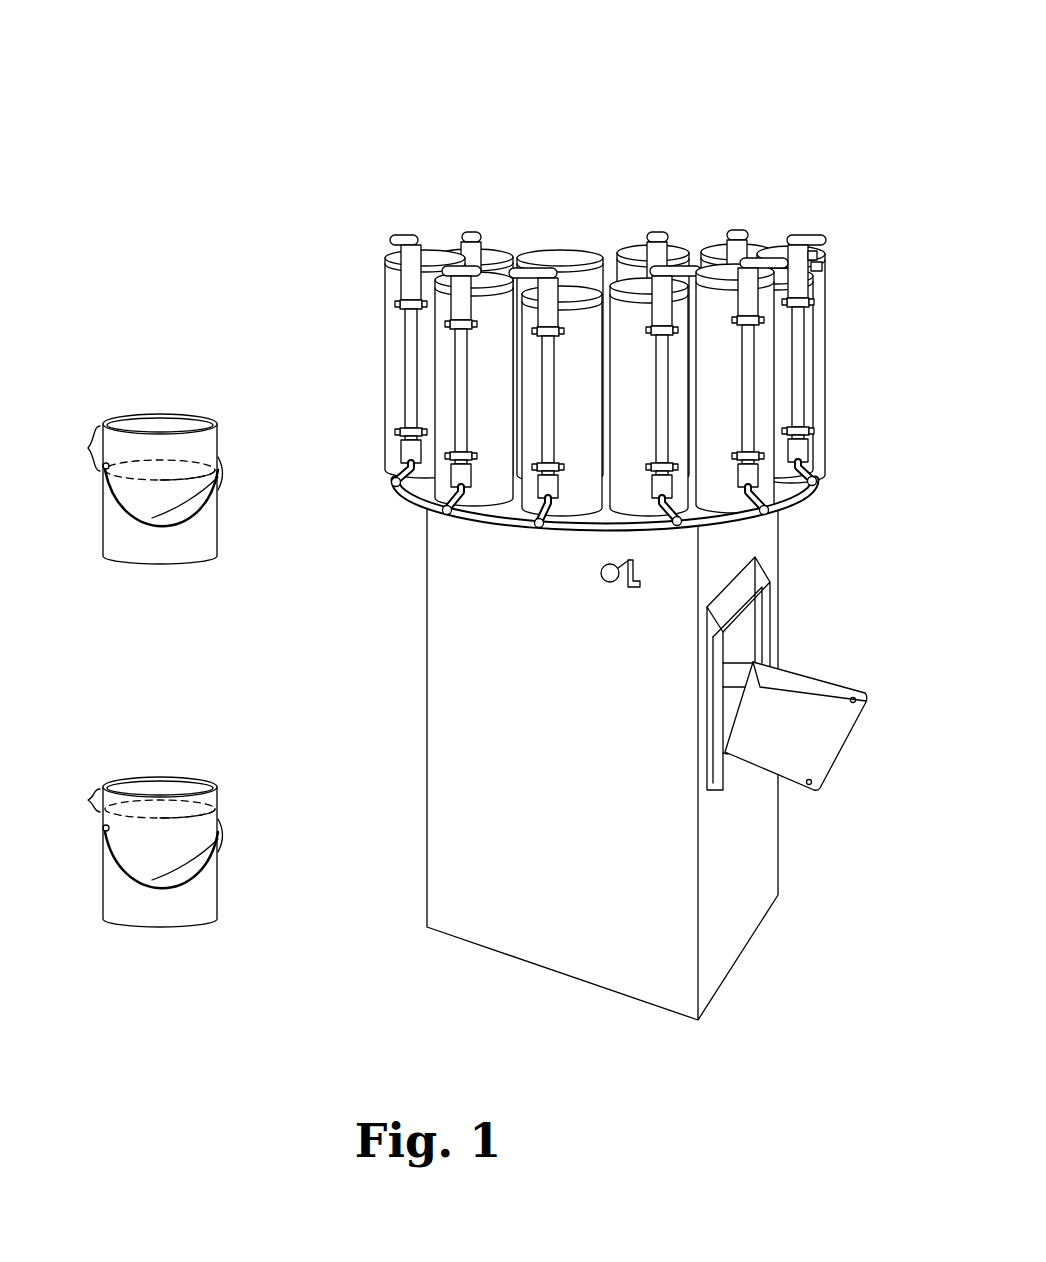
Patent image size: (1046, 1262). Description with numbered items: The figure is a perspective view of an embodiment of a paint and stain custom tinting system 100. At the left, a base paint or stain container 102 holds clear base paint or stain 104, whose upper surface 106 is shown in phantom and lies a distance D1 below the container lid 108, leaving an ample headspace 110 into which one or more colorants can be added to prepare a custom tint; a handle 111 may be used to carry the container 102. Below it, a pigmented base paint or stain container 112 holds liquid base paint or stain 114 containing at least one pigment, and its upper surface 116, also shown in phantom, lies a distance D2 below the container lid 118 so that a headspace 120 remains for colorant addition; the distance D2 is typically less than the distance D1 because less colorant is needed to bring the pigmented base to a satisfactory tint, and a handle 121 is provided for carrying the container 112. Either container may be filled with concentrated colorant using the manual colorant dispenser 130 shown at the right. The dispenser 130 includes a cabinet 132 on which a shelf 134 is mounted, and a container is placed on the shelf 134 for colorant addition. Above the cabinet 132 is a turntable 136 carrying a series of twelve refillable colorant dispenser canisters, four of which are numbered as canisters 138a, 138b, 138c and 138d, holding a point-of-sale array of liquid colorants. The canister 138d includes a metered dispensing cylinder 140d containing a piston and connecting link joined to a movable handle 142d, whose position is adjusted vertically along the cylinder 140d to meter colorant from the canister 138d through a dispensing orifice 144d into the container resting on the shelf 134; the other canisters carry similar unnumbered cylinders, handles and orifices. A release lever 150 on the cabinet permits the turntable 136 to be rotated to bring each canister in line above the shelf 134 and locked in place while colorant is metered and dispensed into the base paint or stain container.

The paint and stain custom tinting system 100 is at (464, 520).
The base paint or stain container 102 is at (157, 472).
The clear base paint or stain 104 is at (192, 506).
The upper surface 106 is at (200, 478).
The container lid 108 is at (170, 427).
The headspace 110 is at (200, 452).
The handle 111 is at (152, 518).
The pigmented base paint or stain container 112 is at (162, 836).
The liquid base paint or stain 114 is at (190, 867).
The upper surface 116 is at (198, 815).
The container lid 118 is at (168, 787).
The headspace 120 is at (213, 801).
The handle 121 is at (145, 880).
The manual colorant dispenser 130 is at (618, 580).
The cabinet 132 is at (447, 722).
The shelf 134 is at (820, 715).
The turntable 136 is at (405, 497).
The colorant dispenser canister 138a is at (613, 248).
The colorant dispenser canister 138b is at (695, 250).
The colorant dispenser canister 138c is at (827, 262).
The colorant dispenser canister 138d is at (818, 450).
The metered dispensing cylinder 140d is at (810, 360).
The movable handle 142d is at (822, 288).
The dispensing orifice 144d is at (813, 486).
The release lever 150 is at (610, 584).
The distance D1 is at (77, 448).
The distance D2 is at (76, 802).